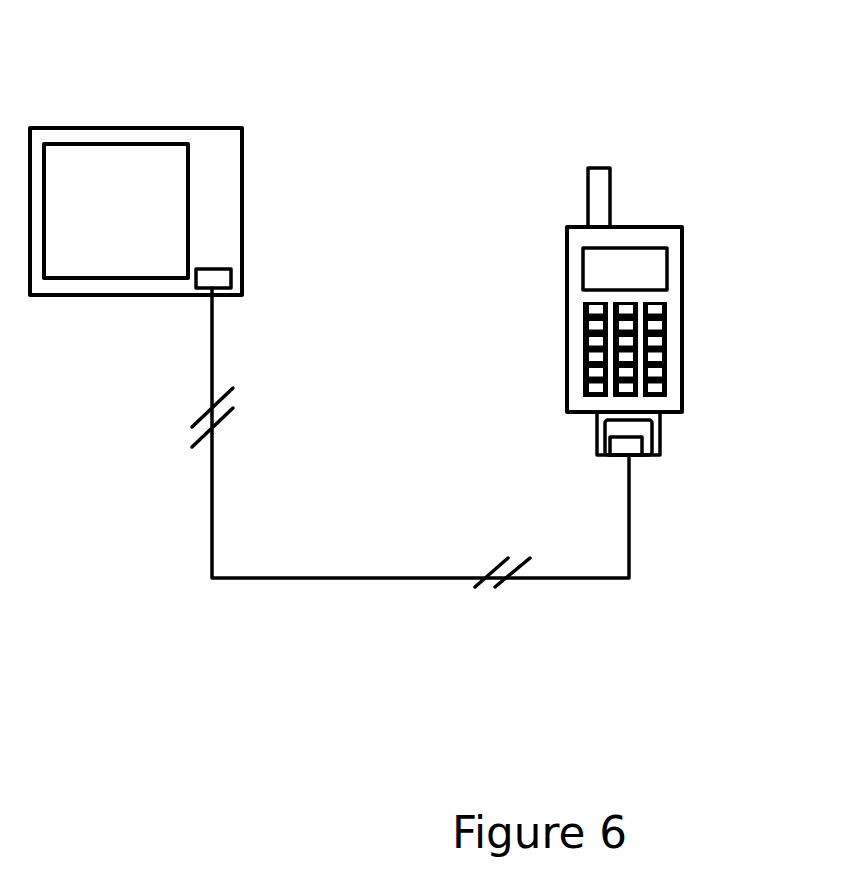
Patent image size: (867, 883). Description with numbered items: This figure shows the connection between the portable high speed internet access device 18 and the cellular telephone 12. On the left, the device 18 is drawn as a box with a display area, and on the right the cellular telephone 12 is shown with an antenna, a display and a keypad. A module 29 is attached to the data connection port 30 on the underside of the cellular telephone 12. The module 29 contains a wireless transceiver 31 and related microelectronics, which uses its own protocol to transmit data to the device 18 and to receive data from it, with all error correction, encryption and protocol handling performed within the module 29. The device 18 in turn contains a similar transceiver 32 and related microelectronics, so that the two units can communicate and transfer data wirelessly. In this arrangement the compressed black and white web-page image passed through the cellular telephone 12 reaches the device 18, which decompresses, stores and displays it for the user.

The cellular telephone 12 is at (692, 234).
The portable high speed internet access device 18 is at (171, 158).
The module 29 is at (565, 473).
The data connection port 30 is at (692, 461).
The wireless transceiver 31 is at (699, 504).
The transceiver 32 is at (139, 334).